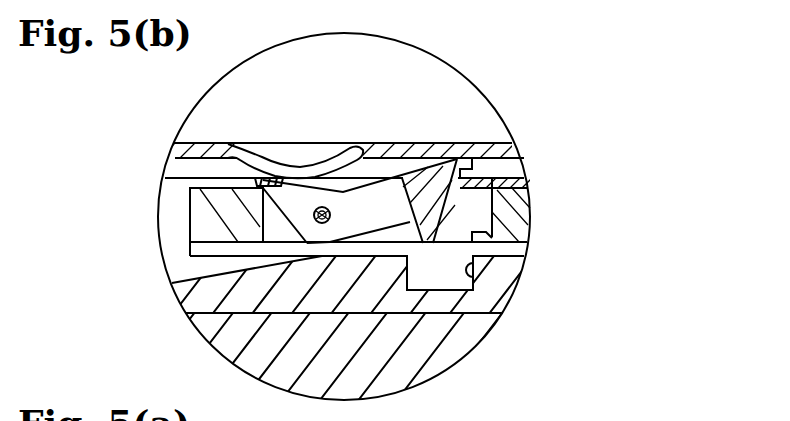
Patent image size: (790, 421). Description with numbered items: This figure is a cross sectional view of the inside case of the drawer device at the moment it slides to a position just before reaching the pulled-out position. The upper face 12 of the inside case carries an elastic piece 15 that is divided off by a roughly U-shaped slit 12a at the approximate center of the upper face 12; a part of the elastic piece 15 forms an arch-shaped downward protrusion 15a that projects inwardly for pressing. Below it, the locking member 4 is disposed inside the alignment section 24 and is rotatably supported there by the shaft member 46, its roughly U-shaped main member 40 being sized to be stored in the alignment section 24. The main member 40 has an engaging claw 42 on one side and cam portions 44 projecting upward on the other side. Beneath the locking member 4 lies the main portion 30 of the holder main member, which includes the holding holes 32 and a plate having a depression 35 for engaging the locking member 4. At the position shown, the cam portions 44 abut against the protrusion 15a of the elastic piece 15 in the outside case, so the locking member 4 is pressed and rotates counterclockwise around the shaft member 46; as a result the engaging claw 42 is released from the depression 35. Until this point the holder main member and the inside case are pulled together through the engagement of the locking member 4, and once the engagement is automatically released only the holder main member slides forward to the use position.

The locking member 4 is at (423, 154).
The main member 40 is at (402, 172).
The upper face 12 is at (487, 150).
The slit 12a is at (418, 170).
The elastic piece 15 is at (213, 127).
The protrusion 15a is at (303, 162).
The alignment section 24 is at (460, 223).
The main portion 30 is at (463, 343).
The holding holes 32 is at (626, 304).
The depression 35 is at (490, 276).
The engaging claw 42 is at (450, 204).
The cam portions 44 is at (255, 171).
The shaft member 46 is at (314, 215).